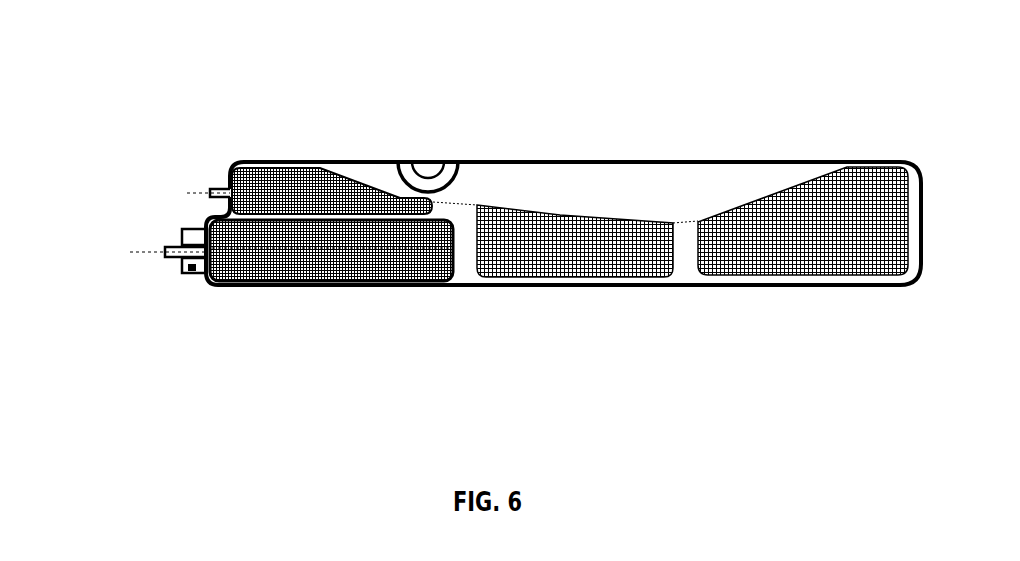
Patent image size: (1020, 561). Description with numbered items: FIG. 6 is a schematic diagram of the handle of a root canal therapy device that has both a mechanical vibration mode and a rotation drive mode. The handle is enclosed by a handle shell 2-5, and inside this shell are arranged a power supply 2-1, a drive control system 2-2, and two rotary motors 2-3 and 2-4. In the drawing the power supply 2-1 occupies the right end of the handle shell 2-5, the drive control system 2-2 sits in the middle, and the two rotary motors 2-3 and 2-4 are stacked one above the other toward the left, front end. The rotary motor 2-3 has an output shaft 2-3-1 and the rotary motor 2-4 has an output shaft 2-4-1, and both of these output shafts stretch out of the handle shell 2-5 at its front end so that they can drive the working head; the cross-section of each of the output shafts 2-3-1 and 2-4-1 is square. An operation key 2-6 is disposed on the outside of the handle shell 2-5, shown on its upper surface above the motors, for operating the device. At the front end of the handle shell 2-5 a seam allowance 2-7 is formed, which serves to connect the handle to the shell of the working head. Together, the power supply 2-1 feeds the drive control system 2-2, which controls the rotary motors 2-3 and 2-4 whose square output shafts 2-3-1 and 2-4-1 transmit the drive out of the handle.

The power supply 2-1 is at (815, 240).
The drive control system 2-2 is at (578, 242).
The rotary motor 2-3 is at (282, 191).
The output shaft 2-3-1 is at (215, 193).
The rotary motor 2-4 is at (328, 265).
The output shaft 2-4-1 is at (170, 252).
The handle shell 2-5 is at (620, 160).
The operation key 2-6 is at (428, 170).
The seam allowance 2-7 is at (193, 272).